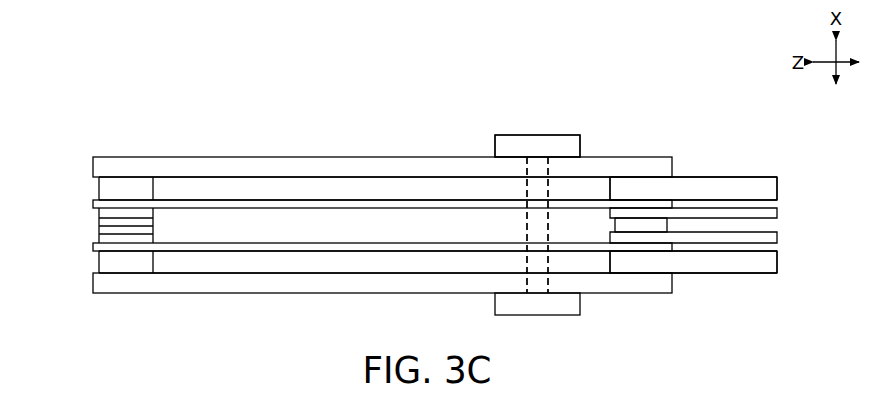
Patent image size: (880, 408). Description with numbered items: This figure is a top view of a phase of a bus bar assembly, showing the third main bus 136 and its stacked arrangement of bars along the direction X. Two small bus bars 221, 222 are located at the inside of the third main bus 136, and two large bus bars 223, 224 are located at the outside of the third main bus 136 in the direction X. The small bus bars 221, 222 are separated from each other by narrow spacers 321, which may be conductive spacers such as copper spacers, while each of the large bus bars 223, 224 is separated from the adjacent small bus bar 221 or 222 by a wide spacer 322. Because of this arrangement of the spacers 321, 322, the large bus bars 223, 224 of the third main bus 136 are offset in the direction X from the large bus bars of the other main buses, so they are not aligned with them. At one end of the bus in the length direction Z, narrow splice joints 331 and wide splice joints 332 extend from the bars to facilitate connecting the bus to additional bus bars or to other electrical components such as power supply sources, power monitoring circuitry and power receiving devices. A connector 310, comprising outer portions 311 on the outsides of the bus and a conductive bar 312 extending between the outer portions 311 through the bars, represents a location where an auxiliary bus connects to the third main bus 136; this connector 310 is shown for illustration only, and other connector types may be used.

The third main bus 136 is at (677, 74).
The small bus bar 221 is at (367, 248).
The small bus bar 222 is at (317, 205).
The large bus bar 223 is at (427, 285).
The large bus bar 224 is at (265, 168).
The connector 310 is at (514, 122).
The outer portion 311 is at (537, 135).
The conductive bar 312 is at (542, 187).
The narrow spacer 321 is at (103, 234).
The wide spacer 322 is at (105, 183).
The narrow splice joint 331 is at (770, 214).
The wide splice joint 332 is at (770, 188).